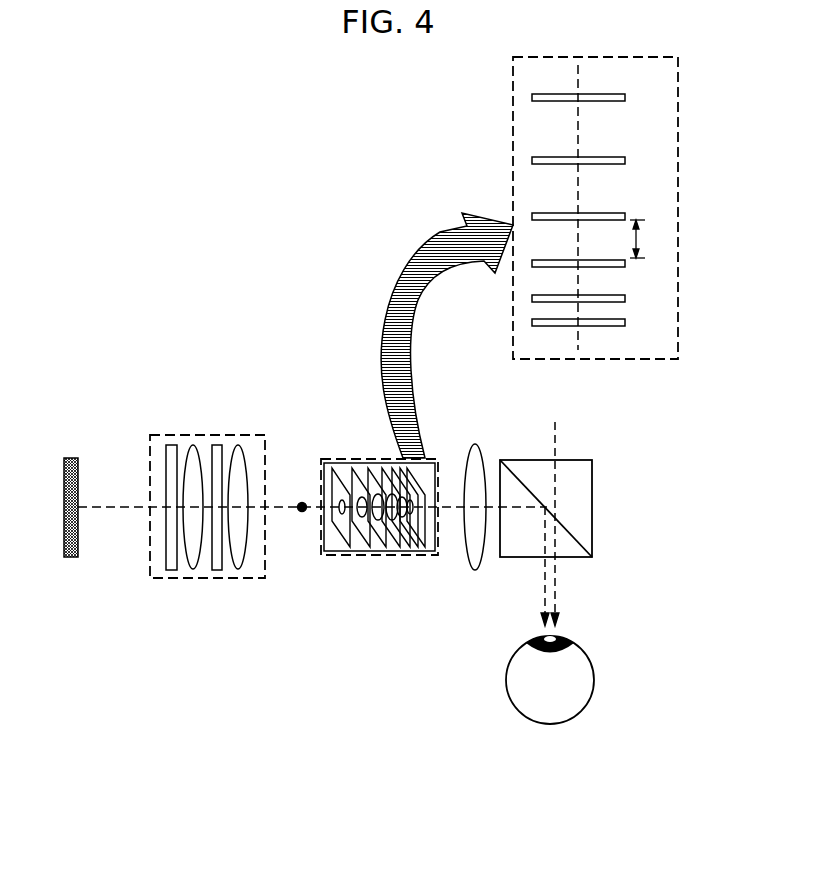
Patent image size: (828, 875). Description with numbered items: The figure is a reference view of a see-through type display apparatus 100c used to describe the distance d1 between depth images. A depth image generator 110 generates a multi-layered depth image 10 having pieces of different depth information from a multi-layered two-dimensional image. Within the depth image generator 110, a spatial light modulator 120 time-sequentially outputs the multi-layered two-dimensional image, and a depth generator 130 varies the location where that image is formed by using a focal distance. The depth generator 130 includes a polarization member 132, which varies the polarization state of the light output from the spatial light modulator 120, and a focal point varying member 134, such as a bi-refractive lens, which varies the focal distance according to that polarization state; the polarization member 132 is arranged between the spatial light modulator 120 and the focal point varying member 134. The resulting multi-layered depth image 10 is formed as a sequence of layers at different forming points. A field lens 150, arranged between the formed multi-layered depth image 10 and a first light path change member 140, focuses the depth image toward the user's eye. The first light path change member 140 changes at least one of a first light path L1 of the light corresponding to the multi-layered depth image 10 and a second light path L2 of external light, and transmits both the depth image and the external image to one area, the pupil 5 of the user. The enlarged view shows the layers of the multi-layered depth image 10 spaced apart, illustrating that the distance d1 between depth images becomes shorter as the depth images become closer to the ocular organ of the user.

The see-through type display apparatus 100c is at (77, 76).
The depth image generator 110 is at (170, 450).
The spatial light modulator 120 is at (72, 458).
The depth generator 130 is at (251, 471).
The polarization member 132 is at (170, 445).
The focal point varying member 134 is at (193, 446).
The multi-layered depth image 10 is at (338, 463).
The field lens 150 is at (475, 444).
The first light path change member 140 is at (527, 460).
The first light path L1 is at (542, 588).
The second light path L2 is at (558, 575).
The pupil 5 is at (594, 680).
The distance between depth images d1 is at (647, 239).